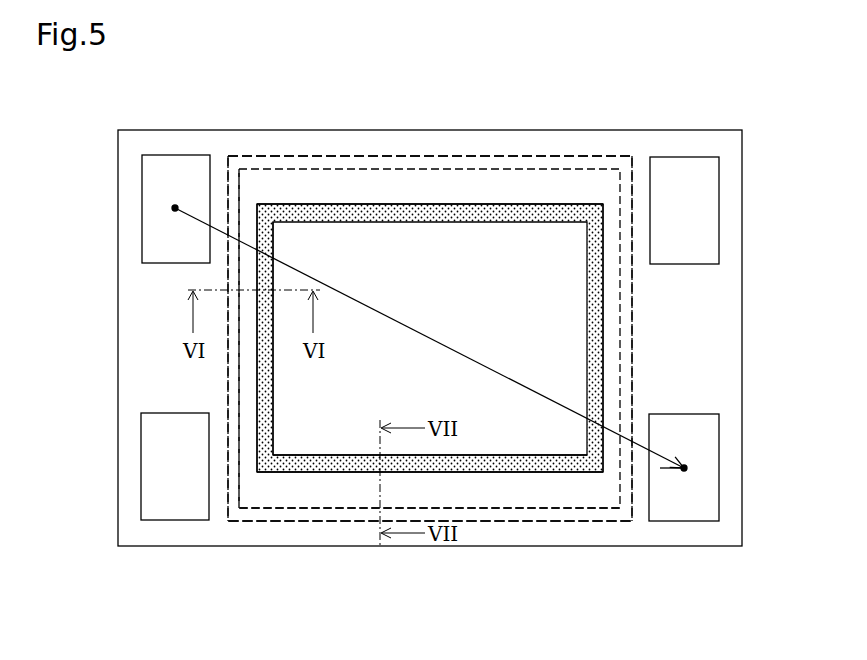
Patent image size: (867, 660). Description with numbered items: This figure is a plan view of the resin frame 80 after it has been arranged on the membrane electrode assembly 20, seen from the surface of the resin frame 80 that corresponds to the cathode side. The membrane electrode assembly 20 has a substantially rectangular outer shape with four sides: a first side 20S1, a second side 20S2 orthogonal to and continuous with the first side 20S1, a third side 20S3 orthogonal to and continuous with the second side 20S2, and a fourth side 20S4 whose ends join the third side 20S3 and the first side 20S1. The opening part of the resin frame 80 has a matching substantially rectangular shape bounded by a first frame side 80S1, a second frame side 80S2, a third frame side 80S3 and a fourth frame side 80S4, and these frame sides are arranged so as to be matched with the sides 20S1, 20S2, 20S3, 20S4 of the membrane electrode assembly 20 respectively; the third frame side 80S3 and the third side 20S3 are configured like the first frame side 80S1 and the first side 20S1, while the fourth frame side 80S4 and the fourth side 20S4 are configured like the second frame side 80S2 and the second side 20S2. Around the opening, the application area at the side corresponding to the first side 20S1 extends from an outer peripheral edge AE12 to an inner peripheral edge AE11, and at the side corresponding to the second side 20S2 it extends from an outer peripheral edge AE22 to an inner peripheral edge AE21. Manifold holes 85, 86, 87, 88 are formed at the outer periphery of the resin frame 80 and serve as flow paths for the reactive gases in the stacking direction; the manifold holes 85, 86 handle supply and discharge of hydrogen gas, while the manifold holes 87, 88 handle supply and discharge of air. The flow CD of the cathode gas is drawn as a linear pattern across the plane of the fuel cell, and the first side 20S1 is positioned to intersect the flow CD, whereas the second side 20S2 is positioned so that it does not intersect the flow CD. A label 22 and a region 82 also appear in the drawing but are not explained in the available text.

The membrane electrode assembly 20 is at (236, 158).
The main surface of element 22 is at (447, 310).
The resin frame 80 is at (678, 130).
The conductive pattern / sealing region 82 is at (430, 169).
The manifold hole 85 is at (719, 208).
The manifold hole 86 is at (141, 465).
The manifold hole 87 is at (142, 208).
The manifold hole 88 is at (719, 466).
The first side 20S1 is at (228, 375).
The second side 20S2 is at (530, 522).
The third side 20S3 is at (633, 297).
The fourth side 20S4 is at (515, 156).
The first frame side 80S1 is at (257, 415).
The second frame side 80S2 is at (549, 472).
The third frame side 80S3 is at (603, 336).
The fourth frame side 80S4 is at (528, 206).
The inner peripheral edge AE11 is at (273, 386).
The outer peripheral edge AE12 is at (239, 402).
The inner peripheral edge AE21 is at (478, 455).
The outer peripheral edge AE22 is at (487, 508).
The flow of air CD is at (370, 308).